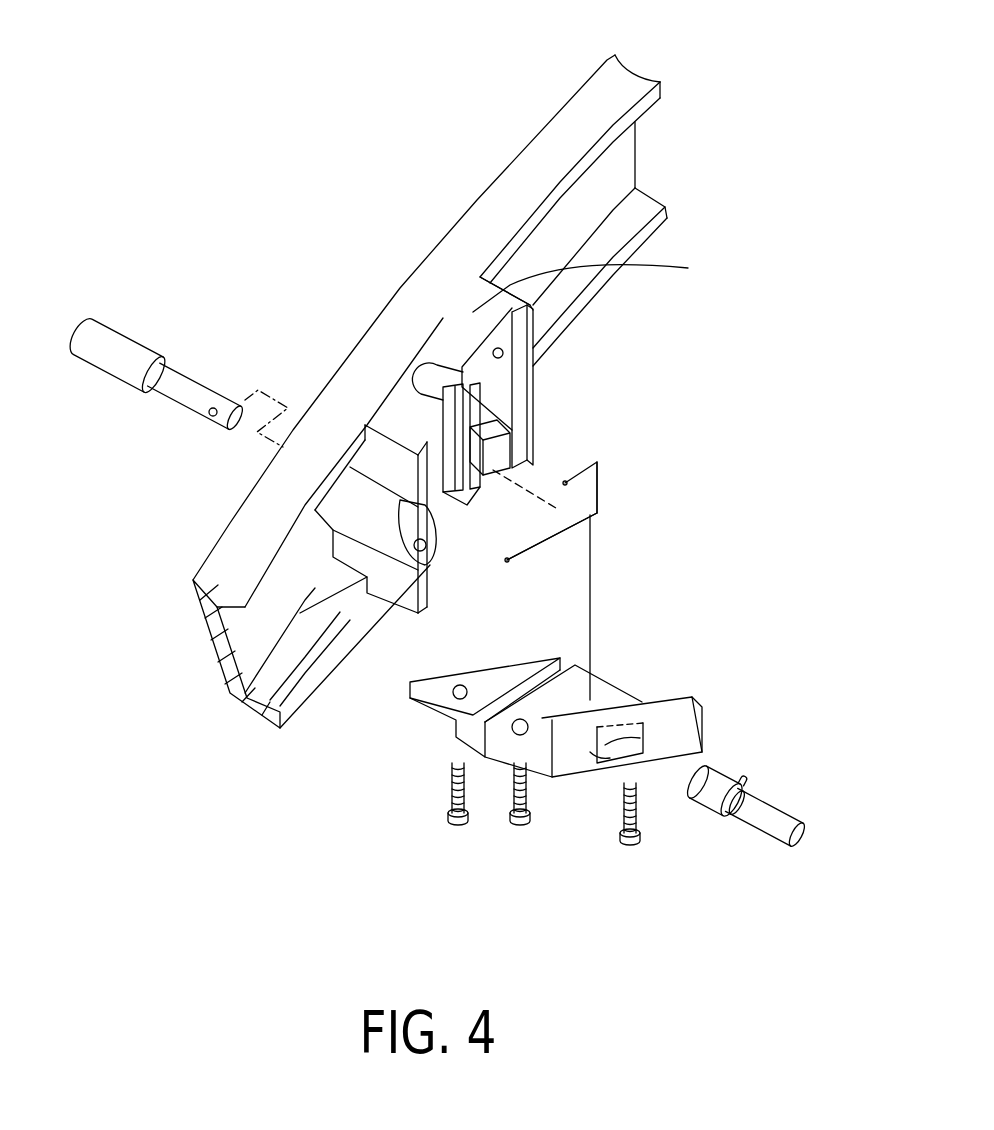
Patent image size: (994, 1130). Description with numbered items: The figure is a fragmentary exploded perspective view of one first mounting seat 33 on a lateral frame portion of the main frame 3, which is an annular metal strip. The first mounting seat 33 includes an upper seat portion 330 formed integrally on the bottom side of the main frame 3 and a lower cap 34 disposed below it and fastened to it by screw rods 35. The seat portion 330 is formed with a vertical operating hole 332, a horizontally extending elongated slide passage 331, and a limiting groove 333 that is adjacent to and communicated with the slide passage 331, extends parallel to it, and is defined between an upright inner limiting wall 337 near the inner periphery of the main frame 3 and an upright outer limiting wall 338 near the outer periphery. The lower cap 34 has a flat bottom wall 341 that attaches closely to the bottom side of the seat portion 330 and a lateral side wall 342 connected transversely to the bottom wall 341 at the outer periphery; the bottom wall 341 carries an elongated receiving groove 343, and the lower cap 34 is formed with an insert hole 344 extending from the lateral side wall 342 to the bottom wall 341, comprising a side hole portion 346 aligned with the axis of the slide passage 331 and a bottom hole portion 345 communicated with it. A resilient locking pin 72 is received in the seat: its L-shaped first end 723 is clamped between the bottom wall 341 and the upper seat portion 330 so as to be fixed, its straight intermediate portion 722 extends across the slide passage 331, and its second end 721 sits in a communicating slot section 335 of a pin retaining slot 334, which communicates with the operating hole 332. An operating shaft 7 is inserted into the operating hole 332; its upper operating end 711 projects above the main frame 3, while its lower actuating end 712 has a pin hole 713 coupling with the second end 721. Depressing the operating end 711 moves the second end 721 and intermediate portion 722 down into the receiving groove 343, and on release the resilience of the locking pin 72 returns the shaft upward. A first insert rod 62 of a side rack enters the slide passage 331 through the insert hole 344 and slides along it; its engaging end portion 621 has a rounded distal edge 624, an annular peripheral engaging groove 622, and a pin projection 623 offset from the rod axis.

The main frame 3 is at (531, 110).
The upper seat portion 330 is at (603, 278).
The first mounting seat 33 is at (550, 373).
The slide passage 331 is at (430, 376).
The operating hole 332 is at (415, 560).
The limiting groove 333 is at (455, 475).
The pin retaining slot 334 is at (507, 433).
The communicating slot section 335 is at (435, 510).
The inner limiting wall 337 is at (540, 528).
The outer limiting wall 338 is at (460, 372).
The lower cap 34 is at (608, 759).
The bottom wall 341 is at (492, 717).
The lateral side wall 342 is at (690, 747).
The receiving groove 343 is at (455, 718).
The insert hole 344 is at (615, 757).
The bottom hole portion 345 is at (608, 758).
The side hole portion 346 is at (687, 747).
The screw rods 35 is at (517, 827).
The operating shaft 7 is at (170, 343).
The upper operating end 711 is at (88, 333).
The lower actuating end 712 is at (200, 388).
The pin hole 713 is at (210, 417).
The resilient locking pin 72 is at (609, 569).
The second end 721 is at (520, 565).
The intermediate portion 722 is at (590, 522).
The first end 723 is at (605, 490).
The first insert rod 62 is at (768, 841).
The engaging end portion 621 is at (735, 797).
The annular peripheral engaging groove 622 is at (725, 800).
The pin projection 623 is at (735, 770).
The rounded distal edge 624 is at (688, 792).